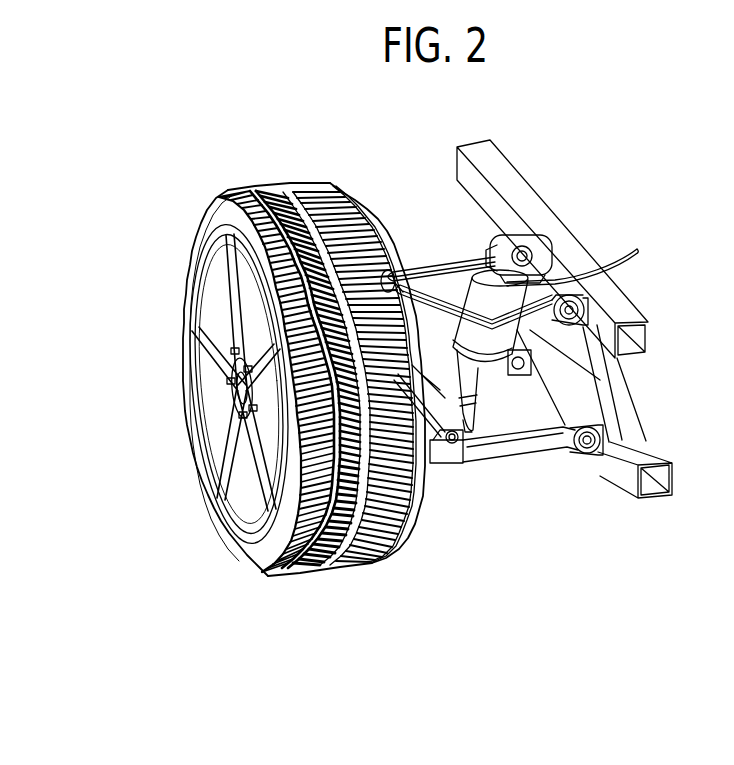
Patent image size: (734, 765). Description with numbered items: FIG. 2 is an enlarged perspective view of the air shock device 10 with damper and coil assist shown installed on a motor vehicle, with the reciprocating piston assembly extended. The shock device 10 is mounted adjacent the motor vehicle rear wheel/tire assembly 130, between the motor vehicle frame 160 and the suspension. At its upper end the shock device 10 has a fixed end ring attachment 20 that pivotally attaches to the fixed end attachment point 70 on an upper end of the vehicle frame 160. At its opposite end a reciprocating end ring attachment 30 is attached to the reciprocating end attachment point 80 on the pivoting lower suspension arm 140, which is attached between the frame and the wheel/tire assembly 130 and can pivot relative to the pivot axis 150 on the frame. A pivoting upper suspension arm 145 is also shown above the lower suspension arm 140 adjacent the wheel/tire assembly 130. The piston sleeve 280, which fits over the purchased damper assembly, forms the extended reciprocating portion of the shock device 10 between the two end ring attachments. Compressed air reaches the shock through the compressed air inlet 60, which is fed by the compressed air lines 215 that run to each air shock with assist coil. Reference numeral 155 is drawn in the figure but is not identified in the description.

The shock device with assist coil 10 is at (490, 352).
The fixed end ring attachment 20 is at (515, 247).
The reciprocating end ring attachment 30 is at (442, 460).
The compressed air inlet 60 is at (492, 252).
The fixed end attachment point on motor vehicle 70 is at (527, 253).
The reciprocating end attachment point on lower suspension arm 80 is at (462, 460).
The motor vehicle rear wheel/tire assembly 130 is at (238, 213).
The pivoting lower suspension arm 140 is at (522, 460).
The pivoting upper suspension arm 145 is at (430, 267).
The pivot axis for lower suspension arm 150 is at (520, 362).
The bushing 155 is at (585, 312).
The motor vehicle frame 160 is at (492, 162).
The compressed air lines to each air shock with assist coil 215 is at (613, 255).
The piston sleeve 280 is at (472, 390).